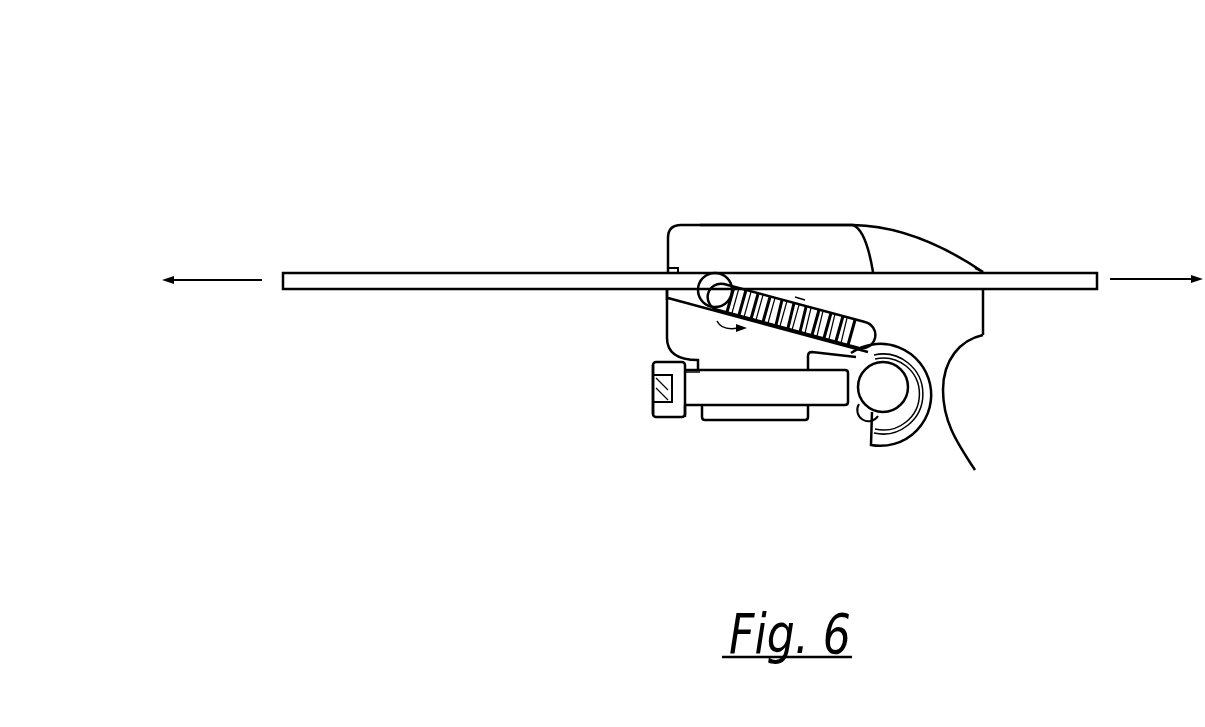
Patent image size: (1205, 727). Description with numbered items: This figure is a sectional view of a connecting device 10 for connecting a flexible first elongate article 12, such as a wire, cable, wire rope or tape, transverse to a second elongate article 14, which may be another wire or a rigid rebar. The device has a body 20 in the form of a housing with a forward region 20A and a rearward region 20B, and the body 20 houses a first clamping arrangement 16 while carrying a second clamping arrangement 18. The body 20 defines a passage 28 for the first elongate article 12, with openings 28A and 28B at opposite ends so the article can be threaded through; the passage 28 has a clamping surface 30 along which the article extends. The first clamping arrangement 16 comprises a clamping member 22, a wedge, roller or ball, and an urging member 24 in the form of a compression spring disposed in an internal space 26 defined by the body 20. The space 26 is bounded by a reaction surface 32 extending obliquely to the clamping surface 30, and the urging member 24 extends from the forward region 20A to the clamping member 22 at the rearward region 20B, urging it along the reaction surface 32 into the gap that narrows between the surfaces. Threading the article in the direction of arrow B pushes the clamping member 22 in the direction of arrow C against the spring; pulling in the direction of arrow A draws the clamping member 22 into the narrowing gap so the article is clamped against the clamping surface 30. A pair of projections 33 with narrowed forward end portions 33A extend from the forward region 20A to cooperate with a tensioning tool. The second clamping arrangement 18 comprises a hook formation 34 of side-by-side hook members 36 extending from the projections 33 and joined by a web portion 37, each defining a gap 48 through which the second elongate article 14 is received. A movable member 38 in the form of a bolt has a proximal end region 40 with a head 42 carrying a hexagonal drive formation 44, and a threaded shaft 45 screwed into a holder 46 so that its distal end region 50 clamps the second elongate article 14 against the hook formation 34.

The connecting device 10 is at (707, 178).
The first elongate article 12 is at (400, 272).
The second elongate article 14 is at (887, 395).
The first clamping arrangement 16 is at (659, 328).
The second clamping arrangement 18 is at (816, 424).
The body 20 is at (825, 235).
The forward region 20A is at (857, 233).
The rearward region 20B is at (675, 250).
The clamping member 22 is at (715, 297).
The urging member 24 is at (748, 340).
The internal space 26 is at (800, 300).
The passage 28 is at (853, 298).
The opening 28A is at (668, 298).
The opening 28B is at (982, 268).
The clamping surface 30 is at (757, 289).
The reaction surface 32 is at (757, 272).
The projections 33 is at (935, 253).
The narrowed forward end portions 33A is at (990, 295).
The hook formation 34 is at (905, 461).
The hook members 36 is at (940, 387).
The web portion 37 is at (928, 400).
The movable member 38 is at (672, 413).
The proximal end region 40 is at (638, 377).
The head 42 is at (670, 414).
The drive formation 44 is at (651, 394).
The threaded shaft 45 is at (697, 398).
The holder 46 is at (788, 415).
The gap 48 is at (863, 406).
The distal end region 50 is at (838, 392).
The arrow A is at (218, 281).
The arrow B is at (1162, 279).
The arrow C is at (728, 345).